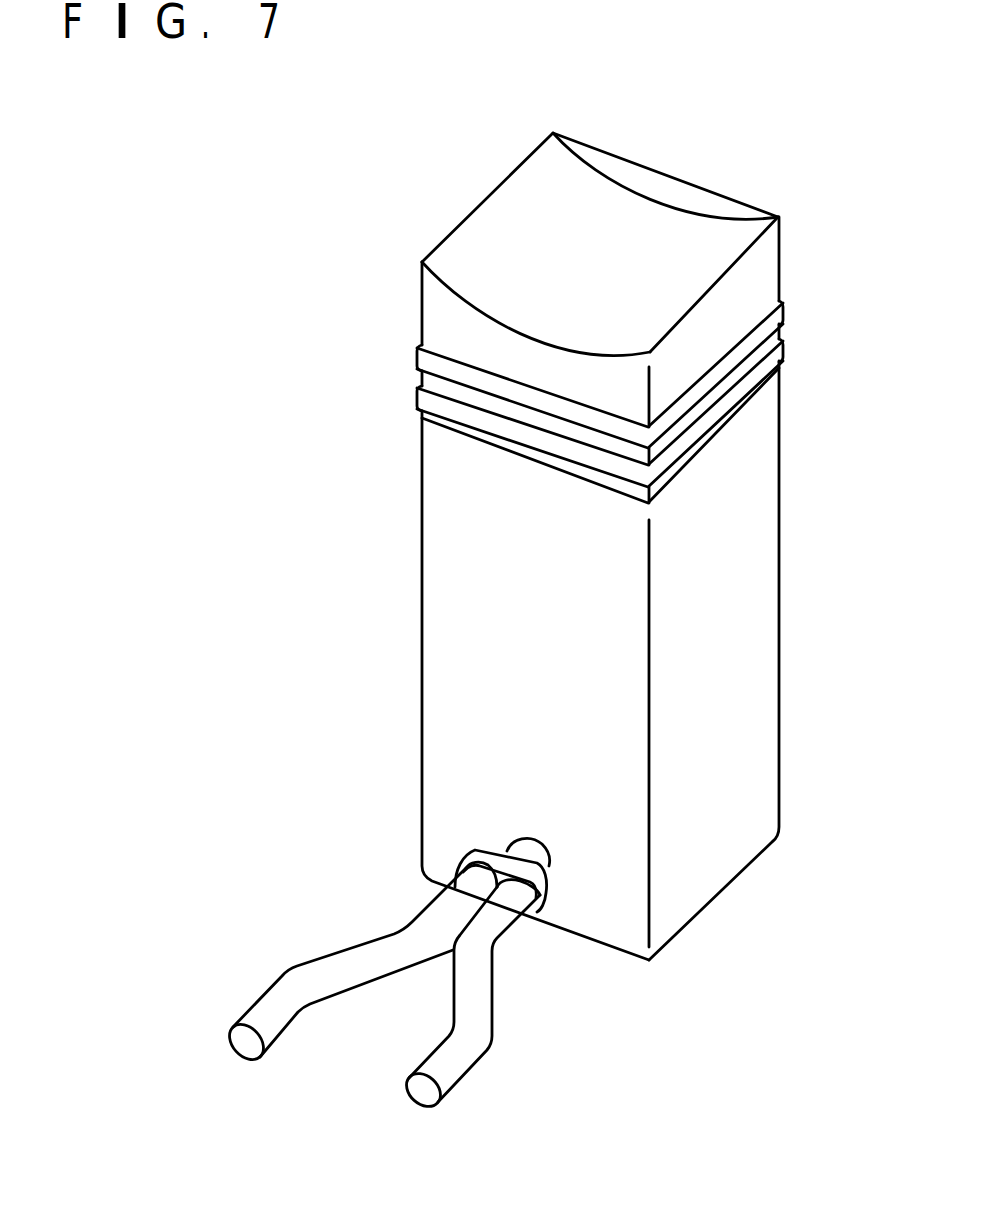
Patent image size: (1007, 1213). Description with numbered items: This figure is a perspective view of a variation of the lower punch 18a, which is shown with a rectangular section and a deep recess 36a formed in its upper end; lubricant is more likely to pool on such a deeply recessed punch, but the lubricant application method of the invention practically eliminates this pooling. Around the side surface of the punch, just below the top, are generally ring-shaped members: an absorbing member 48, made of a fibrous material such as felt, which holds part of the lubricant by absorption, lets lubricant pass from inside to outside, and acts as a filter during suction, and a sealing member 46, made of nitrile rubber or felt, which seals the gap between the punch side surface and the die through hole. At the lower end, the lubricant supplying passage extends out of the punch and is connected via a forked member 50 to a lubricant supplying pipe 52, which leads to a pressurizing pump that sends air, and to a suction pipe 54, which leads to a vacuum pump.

The lower punch 18a is at (384, 516).
The deep recess 36a is at (665, 228).
The absorbing member 48 is at (783, 308).
The sealing member 46 is at (784, 343).
The forked member 50 is at (547, 897).
The lubricant supplying pipe 52 is at (273, 1000).
The suction pipe 54 is at (457, 1060).